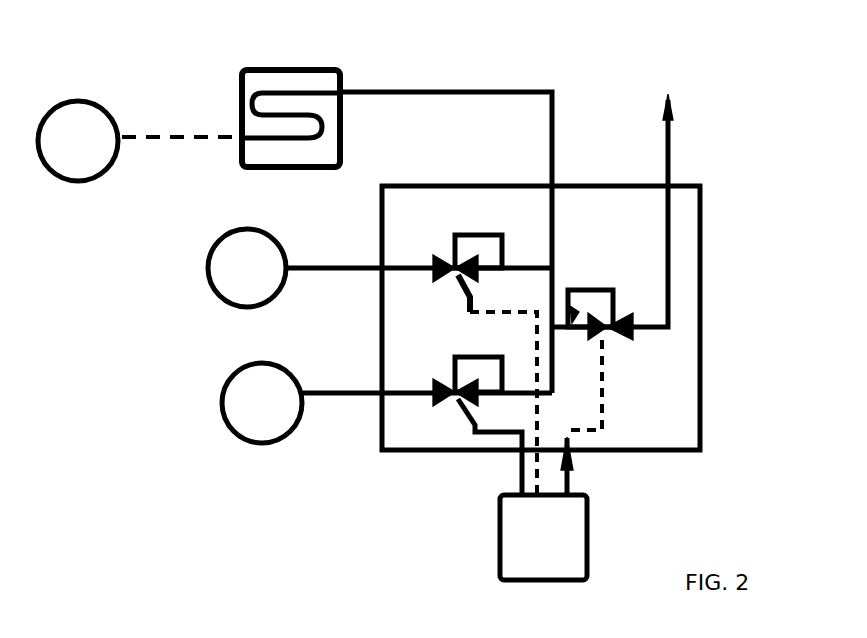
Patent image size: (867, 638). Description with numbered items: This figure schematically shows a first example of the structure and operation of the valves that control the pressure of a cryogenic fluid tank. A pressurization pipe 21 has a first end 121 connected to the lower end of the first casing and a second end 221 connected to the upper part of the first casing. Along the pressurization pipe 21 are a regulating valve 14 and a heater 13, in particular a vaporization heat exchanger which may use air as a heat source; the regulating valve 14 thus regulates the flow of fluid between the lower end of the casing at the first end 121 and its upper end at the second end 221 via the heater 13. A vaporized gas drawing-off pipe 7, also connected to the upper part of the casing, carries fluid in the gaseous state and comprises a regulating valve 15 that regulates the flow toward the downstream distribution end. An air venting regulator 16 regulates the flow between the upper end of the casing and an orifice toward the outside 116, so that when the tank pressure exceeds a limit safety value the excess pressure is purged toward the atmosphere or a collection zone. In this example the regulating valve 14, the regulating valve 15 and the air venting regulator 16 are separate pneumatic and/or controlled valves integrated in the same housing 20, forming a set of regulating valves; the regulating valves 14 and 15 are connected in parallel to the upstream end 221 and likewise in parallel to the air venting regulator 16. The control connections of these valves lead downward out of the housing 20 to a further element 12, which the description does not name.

The vaporized gas drawing-off pipe 7 is at (233, 289).
The pump 12 is at (565, 556).
The heater 13 is at (285, 168).
The regulating valve 14 is at (440, 415).
The regulating valve 15 is at (438, 290).
The air venting regulator 16 is at (625, 345).
The housing 20 is at (703, 262).
The pressurization pipe 21 is at (415, 92).
The outside 116 is at (684, 160).
The first end of the pressurization pipe 121 is at (238, 424).
The second end of the pressurization pipe 221 is at (105, 161).